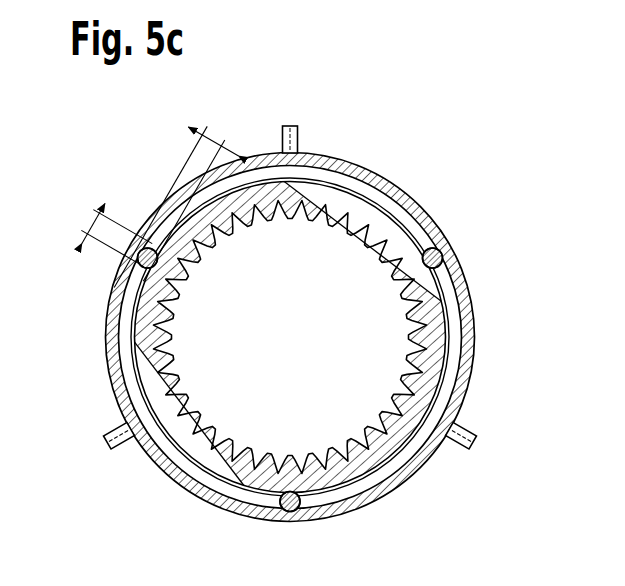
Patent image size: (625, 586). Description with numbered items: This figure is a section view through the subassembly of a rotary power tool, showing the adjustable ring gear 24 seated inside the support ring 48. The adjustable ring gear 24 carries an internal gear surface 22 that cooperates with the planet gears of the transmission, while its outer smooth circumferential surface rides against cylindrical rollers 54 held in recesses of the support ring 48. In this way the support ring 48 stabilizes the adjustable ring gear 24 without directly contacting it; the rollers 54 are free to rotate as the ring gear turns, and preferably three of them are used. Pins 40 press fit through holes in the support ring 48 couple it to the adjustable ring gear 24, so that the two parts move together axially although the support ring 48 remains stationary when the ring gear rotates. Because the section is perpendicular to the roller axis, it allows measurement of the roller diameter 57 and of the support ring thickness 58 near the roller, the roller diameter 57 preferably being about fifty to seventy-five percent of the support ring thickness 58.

The internal gear surface 22 is at (361, 260).
The adjustable ring gear 24 is at (378, 187).
The pins 40 is at (298, 136).
The support ring 48 is at (449, 231).
The rollers 54 is at (443, 259).
The roller diameter 57 is at (95, 226).
The support ring thickness 58 is at (203, 143).